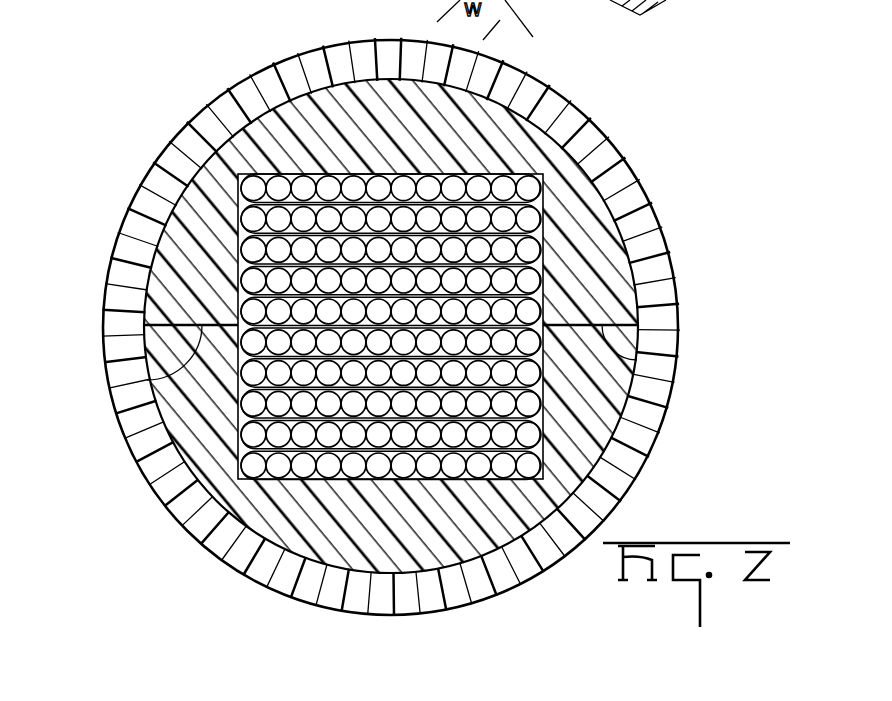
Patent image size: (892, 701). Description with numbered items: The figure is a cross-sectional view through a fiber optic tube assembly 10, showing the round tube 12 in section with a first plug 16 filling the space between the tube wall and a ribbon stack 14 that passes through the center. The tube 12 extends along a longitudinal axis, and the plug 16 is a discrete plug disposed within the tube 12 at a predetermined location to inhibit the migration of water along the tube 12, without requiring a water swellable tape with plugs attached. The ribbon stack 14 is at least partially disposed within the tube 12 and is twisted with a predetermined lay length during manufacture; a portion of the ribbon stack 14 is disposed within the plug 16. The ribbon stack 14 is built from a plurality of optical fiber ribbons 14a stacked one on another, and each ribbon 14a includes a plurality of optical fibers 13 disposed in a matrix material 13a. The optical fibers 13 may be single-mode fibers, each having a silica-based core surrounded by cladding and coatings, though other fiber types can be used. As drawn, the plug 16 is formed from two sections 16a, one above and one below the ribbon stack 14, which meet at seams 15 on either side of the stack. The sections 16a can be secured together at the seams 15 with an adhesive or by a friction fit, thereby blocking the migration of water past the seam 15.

The fiber optic tube assembly 10 is at (110, 195).
The tube 12 is at (650, 407).
The optical fibers 13 is at (305, 184).
The matrix material 13a is at (338, 172).
The ribbon stack 14 is at (517, 174).
The optical fiber ribbons 14a is at (238, 219).
The seams 15 is at (157, 377).
The first plug 16 is at (597, 247).
The sections 16a is at (616, 297).